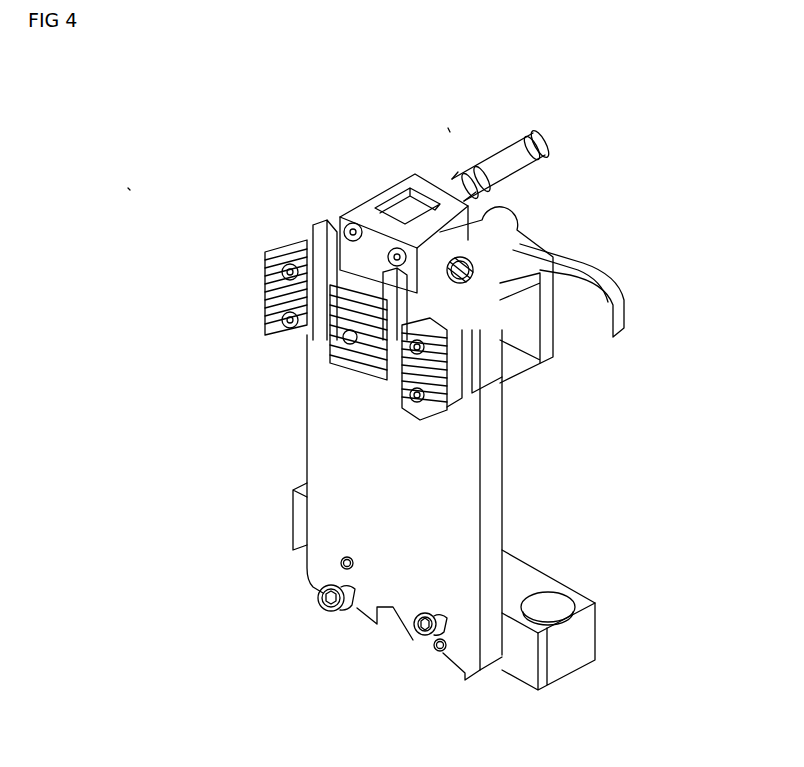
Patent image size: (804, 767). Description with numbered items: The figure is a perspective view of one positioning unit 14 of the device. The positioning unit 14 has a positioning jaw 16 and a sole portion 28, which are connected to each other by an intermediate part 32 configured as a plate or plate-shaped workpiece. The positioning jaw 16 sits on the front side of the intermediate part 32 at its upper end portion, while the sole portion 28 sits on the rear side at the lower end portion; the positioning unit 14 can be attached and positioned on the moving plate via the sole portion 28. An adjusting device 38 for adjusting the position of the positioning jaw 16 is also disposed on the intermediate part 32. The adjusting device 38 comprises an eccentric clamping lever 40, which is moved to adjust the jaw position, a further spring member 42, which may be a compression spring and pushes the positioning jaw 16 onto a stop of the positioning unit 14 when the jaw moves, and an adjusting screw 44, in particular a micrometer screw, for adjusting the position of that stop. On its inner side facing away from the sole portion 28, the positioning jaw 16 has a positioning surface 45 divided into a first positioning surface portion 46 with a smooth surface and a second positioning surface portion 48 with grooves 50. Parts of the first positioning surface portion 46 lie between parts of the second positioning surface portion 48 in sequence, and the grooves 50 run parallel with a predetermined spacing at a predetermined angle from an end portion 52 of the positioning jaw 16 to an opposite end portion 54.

The positioning unit 14 is at (118, 180).
The positioning jaw 16 is at (244, 272).
The sole portion 28 is at (520, 578).
The intermediate part 32 is at (463, 498).
The adjusting device 38 is at (445, 115).
The eccentric clamping lever 40 is at (593, 272).
The further spring member 42 is at (486, 255).
The adjusting screw 44 is at (500, 160).
The positioning surface 45 is at (244, 288).
The first positioning surface portion 46 is at (318, 263).
The second positioning surface portion 48 is at (333, 343).
The grooves 50 is at (458, 397).
The end portion 52 is at (462, 377).
The opposite end portion 54 is at (246, 248).